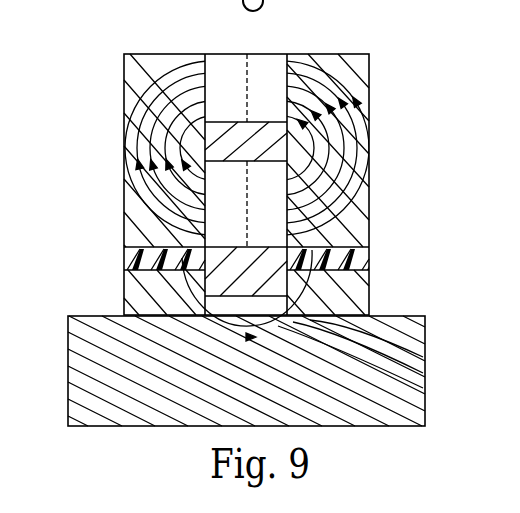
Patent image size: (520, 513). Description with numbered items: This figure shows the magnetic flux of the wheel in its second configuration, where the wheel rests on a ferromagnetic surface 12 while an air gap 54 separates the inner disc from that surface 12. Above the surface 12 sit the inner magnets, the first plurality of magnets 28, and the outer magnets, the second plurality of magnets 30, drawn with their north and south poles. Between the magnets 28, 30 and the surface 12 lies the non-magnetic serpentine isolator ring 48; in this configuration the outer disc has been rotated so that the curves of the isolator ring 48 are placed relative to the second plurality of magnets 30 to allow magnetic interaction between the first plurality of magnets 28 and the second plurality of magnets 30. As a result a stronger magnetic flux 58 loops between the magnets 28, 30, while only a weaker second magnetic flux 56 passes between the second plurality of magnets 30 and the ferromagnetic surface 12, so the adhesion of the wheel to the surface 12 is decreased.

The first plurality of magnets 28 is at (270, 62).
The second plurality of magnets 30 is at (277, 229).
The stronger magnetic flux 58 is at (338, 92).
The isolator ring 48 is at (369, 258).
The air gap 54 is at (220, 308).
The surface 12 is at (400, 315).
The second magnetic flux 56 is at (425, 376).